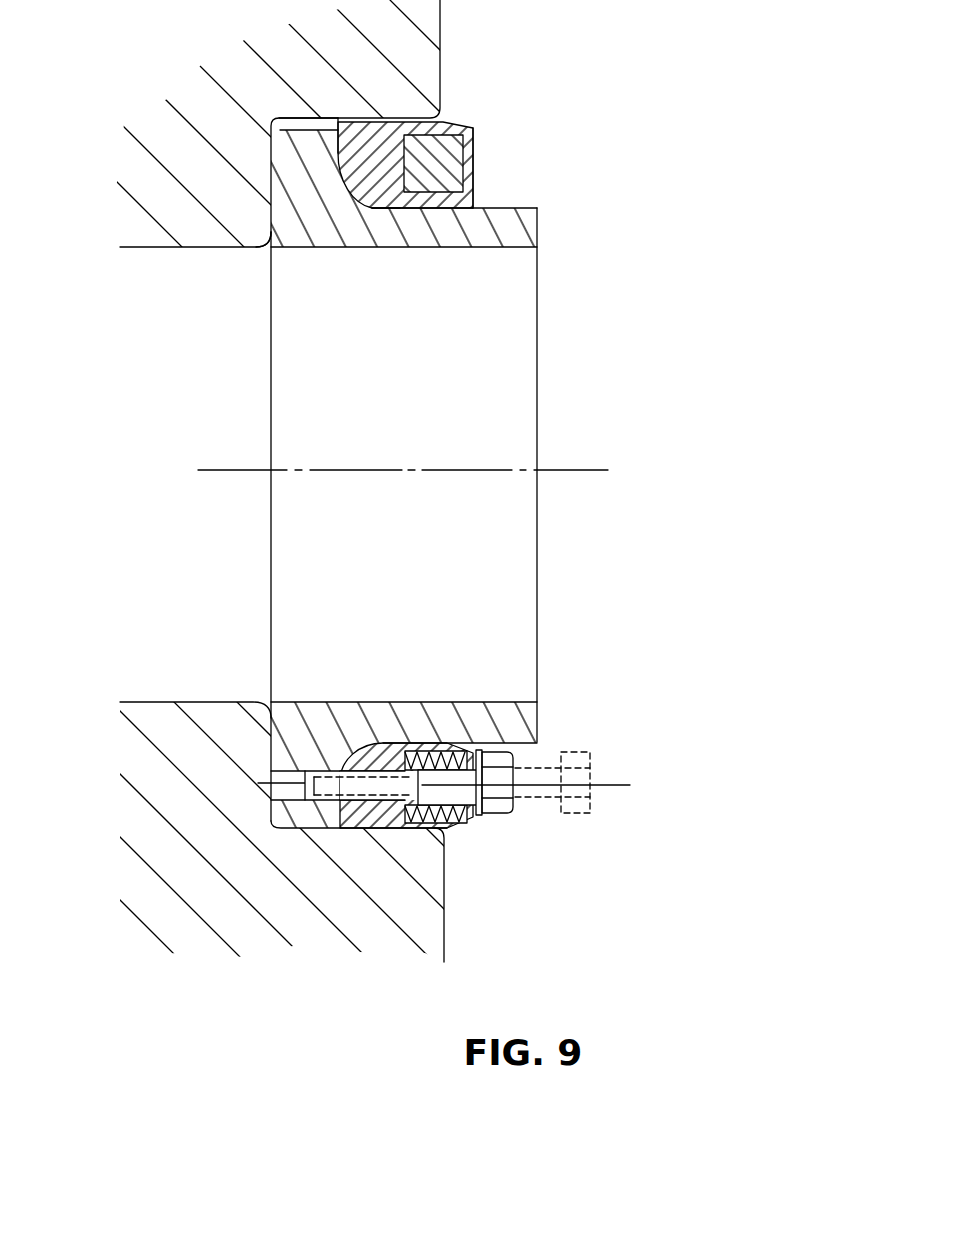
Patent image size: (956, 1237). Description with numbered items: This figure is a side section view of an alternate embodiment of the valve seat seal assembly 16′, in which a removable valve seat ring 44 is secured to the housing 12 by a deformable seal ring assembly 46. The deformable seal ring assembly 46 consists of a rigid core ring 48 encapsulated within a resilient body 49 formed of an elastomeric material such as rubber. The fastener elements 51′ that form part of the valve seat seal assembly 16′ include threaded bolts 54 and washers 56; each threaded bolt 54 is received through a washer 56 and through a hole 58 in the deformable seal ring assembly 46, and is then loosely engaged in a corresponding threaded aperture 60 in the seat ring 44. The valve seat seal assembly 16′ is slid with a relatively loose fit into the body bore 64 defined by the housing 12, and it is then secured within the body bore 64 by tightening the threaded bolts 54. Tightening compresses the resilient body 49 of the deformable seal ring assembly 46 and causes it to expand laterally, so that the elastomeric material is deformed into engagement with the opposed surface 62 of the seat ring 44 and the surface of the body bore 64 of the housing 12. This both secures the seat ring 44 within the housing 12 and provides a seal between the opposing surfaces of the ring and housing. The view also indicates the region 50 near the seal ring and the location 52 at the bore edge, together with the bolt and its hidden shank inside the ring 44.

The housing 12 is at (425, 60).
The valve seat seal assembly 16′ is at (668, 502).
The valve seat ring 44 is at (541, 253).
The deformable seal ring assembly 46 is at (457, 113).
The rigid core ring 48 is at (457, 155).
The resilient body 49 is at (393, 200).
The seal casing 50 is at (477, 203).
The fastener elements 51′ is at (526, 796).
The counterbore 52 is at (293, 248).
The threaded bolts 54 is at (590, 747).
The washers 56 is at (478, 816).
The holes 58 is at (510, 760).
The threaded apertures 60 is at (329, 778).
The opposed surface of the seat ring 62 is at (448, 745).
The body bore 64 is at (445, 870).